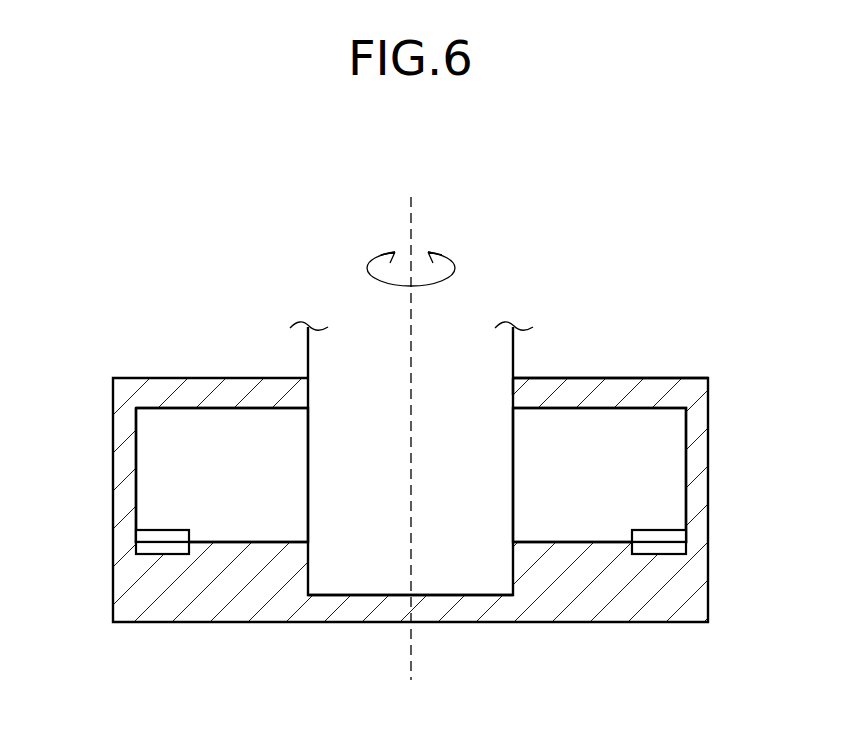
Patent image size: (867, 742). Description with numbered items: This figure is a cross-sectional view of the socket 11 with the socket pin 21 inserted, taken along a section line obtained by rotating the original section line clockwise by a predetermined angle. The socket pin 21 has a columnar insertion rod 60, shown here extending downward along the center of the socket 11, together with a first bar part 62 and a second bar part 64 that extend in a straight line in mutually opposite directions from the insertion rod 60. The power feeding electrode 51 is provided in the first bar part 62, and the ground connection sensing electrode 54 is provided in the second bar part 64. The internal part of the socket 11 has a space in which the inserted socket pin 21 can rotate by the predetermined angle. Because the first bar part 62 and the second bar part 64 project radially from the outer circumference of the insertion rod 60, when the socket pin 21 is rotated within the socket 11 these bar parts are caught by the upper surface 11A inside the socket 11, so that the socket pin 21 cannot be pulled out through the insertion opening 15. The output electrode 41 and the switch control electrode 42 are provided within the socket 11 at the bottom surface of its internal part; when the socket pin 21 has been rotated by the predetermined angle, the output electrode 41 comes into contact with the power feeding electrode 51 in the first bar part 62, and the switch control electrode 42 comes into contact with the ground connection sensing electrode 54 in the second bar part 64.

The socket 11 is at (682, 373).
The upper surface 11A is at (633, 378).
The insertion opening 15 is at (514, 392).
The socket pin 21 is at (473, 338).
The output electrode 41 is at (163, 548).
The switch control electrode 42 is at (657, 556).
The power feeding electrode 51 is at (163, 537).
The ground connection sensing electrode 54 is at (658, 537).
The insertion rod 60 is at (465, 568).
The first bar part 62 is at (163, 463).
The second bar part 64 is at (658, 462).